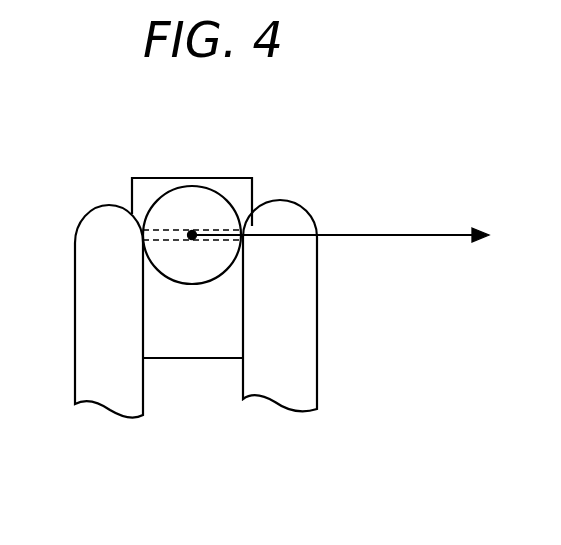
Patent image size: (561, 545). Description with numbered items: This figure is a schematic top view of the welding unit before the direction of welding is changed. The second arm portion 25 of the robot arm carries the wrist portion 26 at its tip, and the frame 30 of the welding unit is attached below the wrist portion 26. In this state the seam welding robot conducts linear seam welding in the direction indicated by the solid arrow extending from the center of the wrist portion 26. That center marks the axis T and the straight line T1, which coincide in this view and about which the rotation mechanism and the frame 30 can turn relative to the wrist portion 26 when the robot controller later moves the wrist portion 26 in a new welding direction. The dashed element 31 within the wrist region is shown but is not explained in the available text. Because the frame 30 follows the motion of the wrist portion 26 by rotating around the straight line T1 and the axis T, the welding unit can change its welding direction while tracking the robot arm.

The second arm portion 25 is at (295, 298).
The wrist portion 26 is at (217, 212).
The frame 30 is at (188, 359).
The detection element 31 is at (168, 230).
The axis T is at (202, 169).
The straight line T1 is at (191, 232).